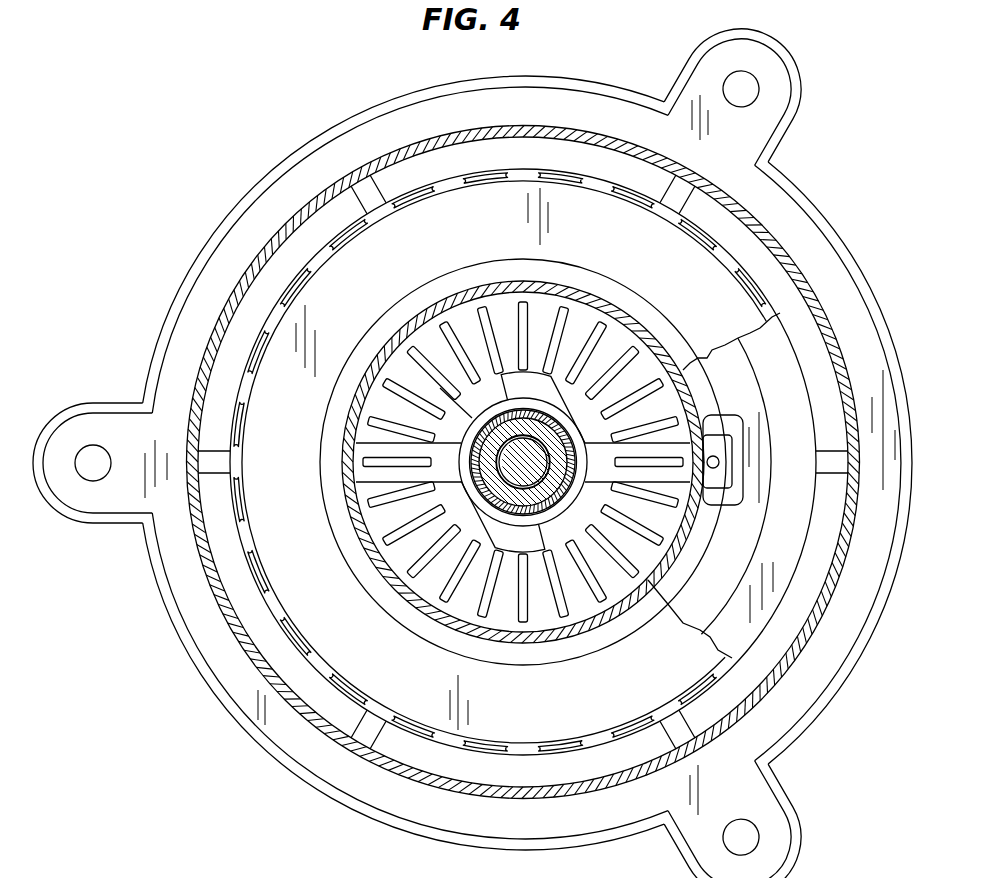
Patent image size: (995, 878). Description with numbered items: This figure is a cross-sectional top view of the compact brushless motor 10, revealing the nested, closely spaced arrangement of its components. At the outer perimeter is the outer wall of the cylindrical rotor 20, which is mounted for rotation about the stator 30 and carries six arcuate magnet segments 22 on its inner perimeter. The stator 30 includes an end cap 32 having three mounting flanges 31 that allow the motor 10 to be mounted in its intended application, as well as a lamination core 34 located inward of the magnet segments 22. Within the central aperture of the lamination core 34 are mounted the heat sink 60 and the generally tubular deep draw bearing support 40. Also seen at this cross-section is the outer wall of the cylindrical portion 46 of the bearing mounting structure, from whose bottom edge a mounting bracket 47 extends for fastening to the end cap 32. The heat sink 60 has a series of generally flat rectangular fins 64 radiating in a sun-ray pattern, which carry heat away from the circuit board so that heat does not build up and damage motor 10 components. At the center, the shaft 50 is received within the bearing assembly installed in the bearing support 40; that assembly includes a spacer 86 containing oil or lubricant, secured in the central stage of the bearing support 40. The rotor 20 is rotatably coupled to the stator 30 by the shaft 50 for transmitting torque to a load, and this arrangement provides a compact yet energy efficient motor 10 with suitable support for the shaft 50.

The compact brushless motor 10 is at (175, 159).
The rotor 20 is at (186, 356).
The arcuate magnet segments 22 is at (425, 155).
The stator 30 is at (288, 447).
The mounting flanges 31 is at (803, 110).
The end cap 32 is at (186, 647).
The lamination core 34 is at (280, 259).
The bearing support 40 is at (528, 408).
The cylindrical portion 46 is at (412, 307).
The mounting bracket 47 is at (713, 428).
The shaft 50 is at (538, 443).
The heat sink 60 is at (658, 560).
The fins 64 is at (447, 322).
The spacer 86 is at (527, 513).